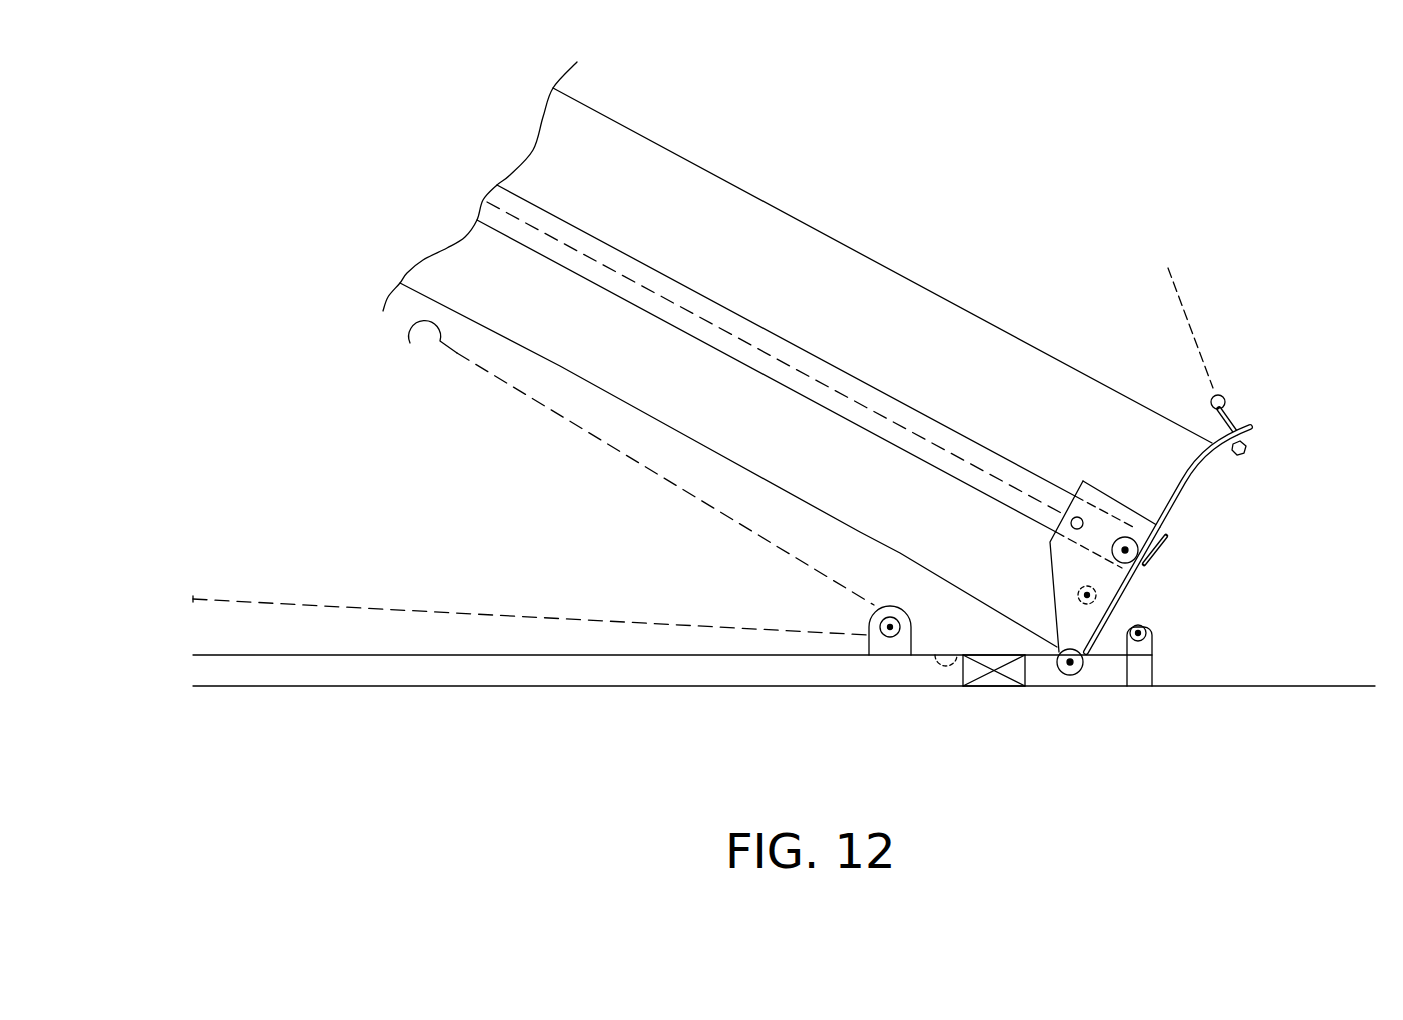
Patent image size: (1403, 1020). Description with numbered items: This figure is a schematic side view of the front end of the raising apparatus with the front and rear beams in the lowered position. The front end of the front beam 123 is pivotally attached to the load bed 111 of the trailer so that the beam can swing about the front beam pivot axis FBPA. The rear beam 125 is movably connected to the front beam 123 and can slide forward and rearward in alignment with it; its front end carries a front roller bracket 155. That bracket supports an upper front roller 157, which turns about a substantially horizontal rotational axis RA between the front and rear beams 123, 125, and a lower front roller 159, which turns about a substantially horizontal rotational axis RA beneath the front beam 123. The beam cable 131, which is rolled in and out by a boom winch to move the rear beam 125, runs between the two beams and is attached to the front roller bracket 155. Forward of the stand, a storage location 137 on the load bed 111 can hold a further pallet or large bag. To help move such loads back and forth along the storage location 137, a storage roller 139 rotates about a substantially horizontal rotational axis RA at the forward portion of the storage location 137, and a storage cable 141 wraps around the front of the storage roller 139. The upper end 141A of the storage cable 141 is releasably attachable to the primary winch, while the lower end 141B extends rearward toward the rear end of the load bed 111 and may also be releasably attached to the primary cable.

The load bed 111 is at (1309, 684).
The front beam 123 is at (555, 363).
The rear beam 125 is at (798, 217).
The beam cable 131 is at (867, 411).
The storage location 137 is at (300, 655).
The storage roller 139 is at (887, 635).
The storage cable 141 is at (578, 610).
The upper end of the storage cable 141A is at (425, 332).
The lower end of the storage cable 141B is at (198, 597).
The front roller bracket 155 is at (1130, 497).
The upper front roller 157 is at (1140, 533).
The lower front roller 159 is at (1075, 672).
The rotational axis RA is at (1143, 578).
The front beam pivot axis FBPA is at (1148, 628).